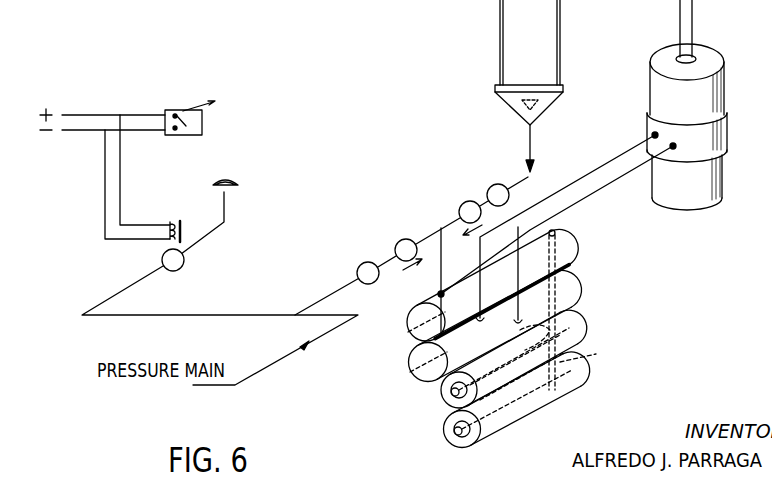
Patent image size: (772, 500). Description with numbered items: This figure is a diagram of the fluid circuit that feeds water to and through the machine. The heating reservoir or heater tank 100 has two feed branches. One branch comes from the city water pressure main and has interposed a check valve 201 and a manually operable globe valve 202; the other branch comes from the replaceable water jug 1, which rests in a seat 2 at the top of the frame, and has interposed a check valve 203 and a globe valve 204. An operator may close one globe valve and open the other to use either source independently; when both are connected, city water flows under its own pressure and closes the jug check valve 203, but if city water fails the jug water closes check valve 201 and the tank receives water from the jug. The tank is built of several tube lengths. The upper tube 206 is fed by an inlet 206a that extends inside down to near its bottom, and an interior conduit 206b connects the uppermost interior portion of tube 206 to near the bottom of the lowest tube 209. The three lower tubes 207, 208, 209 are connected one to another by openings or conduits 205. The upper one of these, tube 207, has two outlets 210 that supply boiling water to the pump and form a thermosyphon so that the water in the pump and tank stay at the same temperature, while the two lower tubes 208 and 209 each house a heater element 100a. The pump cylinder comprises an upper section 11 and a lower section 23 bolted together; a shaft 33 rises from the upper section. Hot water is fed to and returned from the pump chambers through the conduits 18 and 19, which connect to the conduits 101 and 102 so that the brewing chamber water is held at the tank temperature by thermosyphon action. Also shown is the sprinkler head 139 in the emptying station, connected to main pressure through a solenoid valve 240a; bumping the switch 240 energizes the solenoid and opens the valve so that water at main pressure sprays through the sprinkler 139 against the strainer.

The water jug 1 is at (562, 70).
The seat 2 is at (540, 118).
The upper section 11 is at (723, 85).
The conduit 18 is at (656, 133).
The conduit 19 is at (674, 144).
The lower section 23 is at (727, 178).
The shaft 33 is at (693, 33).
The heating reservoir 100 is at (416, 392).
The heater element 100a is at (455, 403).
The conduit 101 is at (597, 168).
The conduit 102 is at (605, 178).
The sprinkler head 139 is at (236, 180).
The check valve 201 is at (405, 239).
The globe valve 202 is at (361, 264).
The check valve 203 is at (460, 204).
The globe valve 204 is at (499, 184).
The conduits 205 is at (515, 347).
The upper tube 206 is at (572, 250).
The inlet 206a is at (410, 330).
The interior conduit 206b is at (595, 353).
The upper lower tube 207 is at (580, 286).
The lower tube 208 is at (582, 320).
The lower tube 209 is at (578, 378).
The outlets 210 is at (480, 324).
The switch 240 is at (202, 123).
The solenoid valve 240a is at (183, 266).